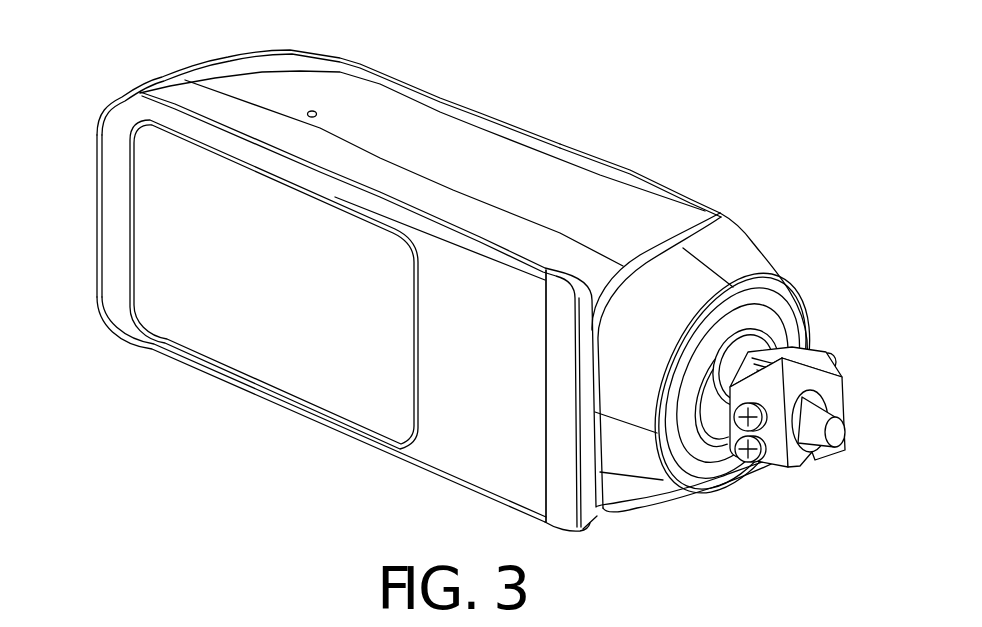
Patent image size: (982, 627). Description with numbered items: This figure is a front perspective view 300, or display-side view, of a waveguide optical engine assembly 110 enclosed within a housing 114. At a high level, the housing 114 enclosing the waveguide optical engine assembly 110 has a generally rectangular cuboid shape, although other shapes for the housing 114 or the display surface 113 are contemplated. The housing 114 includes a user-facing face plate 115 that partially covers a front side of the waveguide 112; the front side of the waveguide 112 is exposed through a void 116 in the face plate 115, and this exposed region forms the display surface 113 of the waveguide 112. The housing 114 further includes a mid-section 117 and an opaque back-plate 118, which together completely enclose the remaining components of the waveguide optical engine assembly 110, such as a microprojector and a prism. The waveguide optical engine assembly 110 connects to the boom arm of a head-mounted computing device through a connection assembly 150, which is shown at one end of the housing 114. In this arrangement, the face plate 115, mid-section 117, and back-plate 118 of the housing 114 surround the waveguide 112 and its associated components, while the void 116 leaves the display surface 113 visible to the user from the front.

The waveguide optical engine assembly 110 is at (435, 291).
The waveguide 112 is at (226, 336).
The display surface 113 is at (292, 296).
The housing 114 is at (192, 58).
The face plate 115 is at (584, 537).
The void 116 is at (125, 221).
The mid-section 117 is at (650, 214).
The opaque back-plate 118 is at (646, 164).
The connection assembly 150 is at (856, 398).
The front perspective view 300 is at (470, 291).